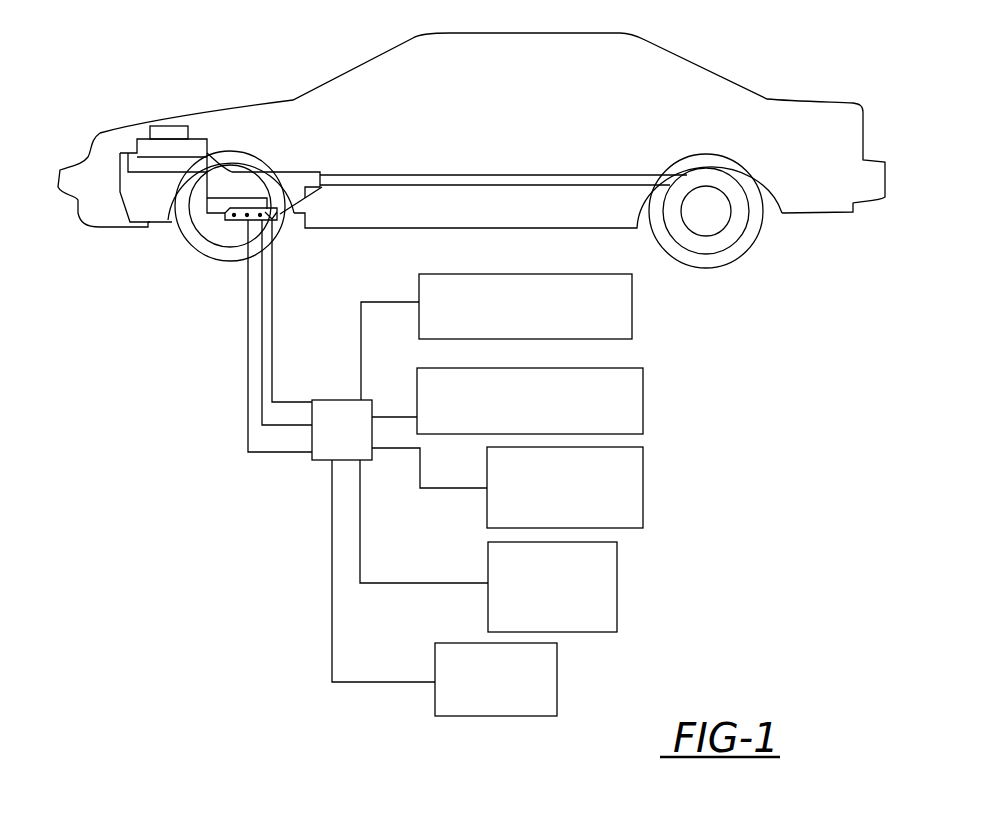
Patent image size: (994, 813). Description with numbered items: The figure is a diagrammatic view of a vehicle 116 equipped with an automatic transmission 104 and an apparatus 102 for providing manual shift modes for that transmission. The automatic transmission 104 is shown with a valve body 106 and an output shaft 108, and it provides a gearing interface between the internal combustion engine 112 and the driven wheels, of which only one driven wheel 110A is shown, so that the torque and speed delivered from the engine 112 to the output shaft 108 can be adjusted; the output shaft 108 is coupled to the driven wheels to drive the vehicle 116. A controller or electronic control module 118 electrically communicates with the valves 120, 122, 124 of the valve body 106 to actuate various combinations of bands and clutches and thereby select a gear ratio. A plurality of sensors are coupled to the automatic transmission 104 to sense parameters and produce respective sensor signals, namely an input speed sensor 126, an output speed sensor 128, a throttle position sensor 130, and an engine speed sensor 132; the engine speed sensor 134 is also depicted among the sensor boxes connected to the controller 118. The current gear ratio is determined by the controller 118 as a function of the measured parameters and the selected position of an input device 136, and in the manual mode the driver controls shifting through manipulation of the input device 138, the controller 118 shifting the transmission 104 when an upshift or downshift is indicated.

The apparatus 102 is at (296, 559).
The automatic transmission 104 is at (305, 178).
The valve body 106 is at (282, 214).
The output shaft 108 is at (377, 182).
The driven wheel 110A is at (758, 236).
The internal combustion engine 112 is at (118, 168).
The vehicle 116 is at (735, 83).
The controller 118 is at (314, 462).
The valve 120 is at (273, 218).
The valve 122 is at (268, 221).
The valve 124 is at (278, 220).
The input speed sensor 126 is at (632, 302).
The output speed sensor 128 is at (643, 419).
The throttle position sensor 130 is at (643, 487).
The engine speed sensor 132 is at (190, 132).
The engine speed sensor 134 is at (617, 602).
The input device 136 is at (557, 697).
The input device 138 is at (187, 230).